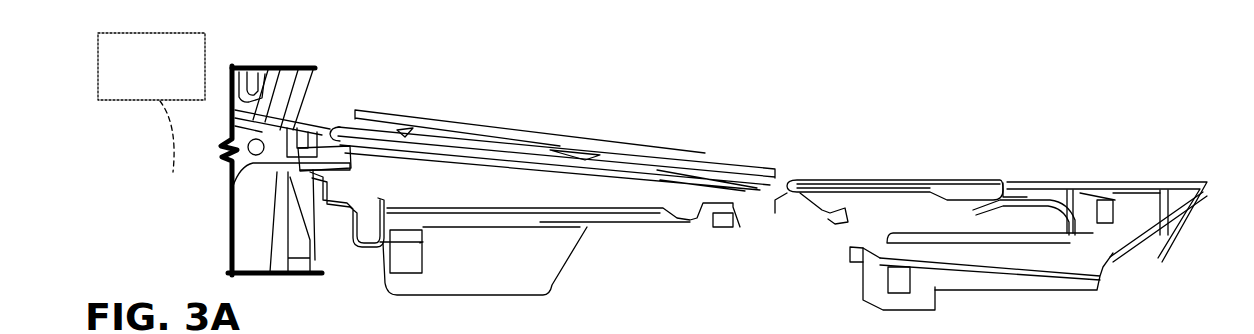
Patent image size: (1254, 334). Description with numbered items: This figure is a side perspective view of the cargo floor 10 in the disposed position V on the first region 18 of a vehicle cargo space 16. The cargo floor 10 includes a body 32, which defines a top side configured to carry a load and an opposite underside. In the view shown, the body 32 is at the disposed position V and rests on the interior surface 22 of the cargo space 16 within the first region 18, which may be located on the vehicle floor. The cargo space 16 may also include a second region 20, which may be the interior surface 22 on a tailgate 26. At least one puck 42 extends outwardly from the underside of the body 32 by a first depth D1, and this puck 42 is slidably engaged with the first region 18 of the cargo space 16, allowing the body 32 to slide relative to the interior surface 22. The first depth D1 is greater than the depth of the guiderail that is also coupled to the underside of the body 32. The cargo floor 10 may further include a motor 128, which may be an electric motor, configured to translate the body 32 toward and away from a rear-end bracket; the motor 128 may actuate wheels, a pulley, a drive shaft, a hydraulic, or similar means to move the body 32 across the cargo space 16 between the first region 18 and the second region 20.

The cargo floor 10 is at (536, 129).
The cargo space 16 is at (313, 86).
The first region 18 is at (341, 118).
The second region 20 is at (1166, 172).
The interior surface 22 is at (856, 175).
The tailgate 26 is at (1107, 240).
The body 32 is at (487, 124).
The puck 42 is at (404, 137).
The motor 128 is at (151, 117).
The first depth D1 is at (772, 212).
The disposed position V is at (687, 119).